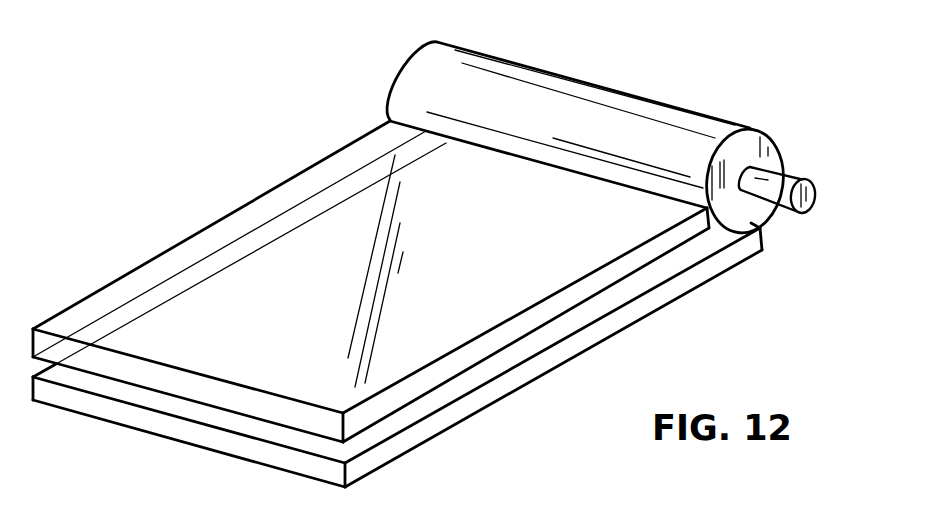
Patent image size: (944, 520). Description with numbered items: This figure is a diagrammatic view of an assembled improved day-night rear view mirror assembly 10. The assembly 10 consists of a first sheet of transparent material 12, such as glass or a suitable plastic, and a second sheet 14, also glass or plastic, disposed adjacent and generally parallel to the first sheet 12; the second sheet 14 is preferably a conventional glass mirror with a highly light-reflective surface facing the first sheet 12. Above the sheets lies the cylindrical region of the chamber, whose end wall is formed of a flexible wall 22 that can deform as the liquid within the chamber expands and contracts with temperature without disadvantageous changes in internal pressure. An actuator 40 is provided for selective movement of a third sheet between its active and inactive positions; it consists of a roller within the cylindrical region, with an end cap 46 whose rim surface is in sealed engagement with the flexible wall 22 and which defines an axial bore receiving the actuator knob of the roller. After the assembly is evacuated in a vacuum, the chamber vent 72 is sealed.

The day-night rear view mirror assembly 10 is at (471, 258).
The first sheet of transparent material 12 is at (402, 456).
The second sheet 14 is at (271, 210).
The flexible wall 22 is at (508, 64).
The end cap 46 is at (762, 147).
The actuator 40 is at (824, 185).
The chamber vent 72 is at (711, 226).